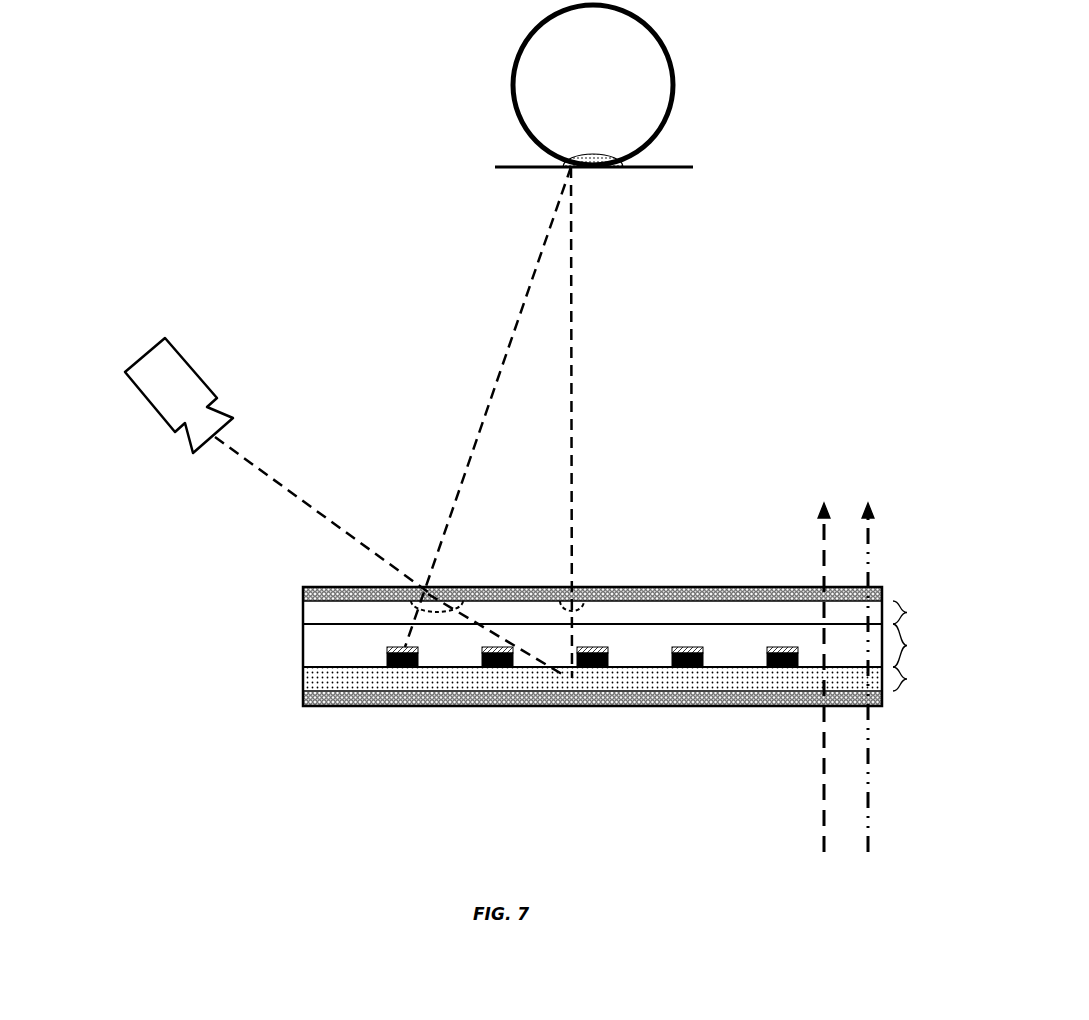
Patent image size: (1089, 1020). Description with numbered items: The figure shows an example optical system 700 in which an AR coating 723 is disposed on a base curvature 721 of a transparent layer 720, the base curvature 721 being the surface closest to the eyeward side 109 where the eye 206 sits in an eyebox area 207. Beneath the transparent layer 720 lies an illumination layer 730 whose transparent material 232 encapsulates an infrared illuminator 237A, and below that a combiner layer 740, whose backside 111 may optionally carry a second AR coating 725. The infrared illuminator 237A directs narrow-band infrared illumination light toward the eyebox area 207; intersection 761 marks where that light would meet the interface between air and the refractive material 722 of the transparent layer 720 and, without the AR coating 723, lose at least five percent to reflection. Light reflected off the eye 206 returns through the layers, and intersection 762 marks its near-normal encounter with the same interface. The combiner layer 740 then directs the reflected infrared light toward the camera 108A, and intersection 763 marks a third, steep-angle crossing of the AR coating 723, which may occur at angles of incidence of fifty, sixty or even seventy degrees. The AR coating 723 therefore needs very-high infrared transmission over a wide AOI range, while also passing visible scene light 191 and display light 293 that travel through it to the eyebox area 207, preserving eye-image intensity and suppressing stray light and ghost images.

The optical system 700 is at (1080, 97).
The eye 206 is at (667, 55).
The eyebox area 207 is at (693, 167).
The camera 108A is at (180, 360).
The eyeward side 109 is at (798, 428).
The backside 111 is at (411, 760).
The AR coating 723 is at (300, 593).
The base curvature 721 is at (316, 601).
The refractive material 722 is at (776, 623).
The second AR coating 725 is at (300, 698).
The infrared illuminator 237A is at (418, 660).
The transparent material 232 is at (750, 655).
The intersection 761 is at (412, 602).
The intersection 762 is at (577, 595).
The intersection 763 is at (452, 588).
The transparent layer 720 is at (926, 614).
The illumination layer 730 is at (926, 645).
The combiner layer 740 is at (926, 679).
The scene light 191 is at (831, 692).
The display light 293 is at (869, 692).